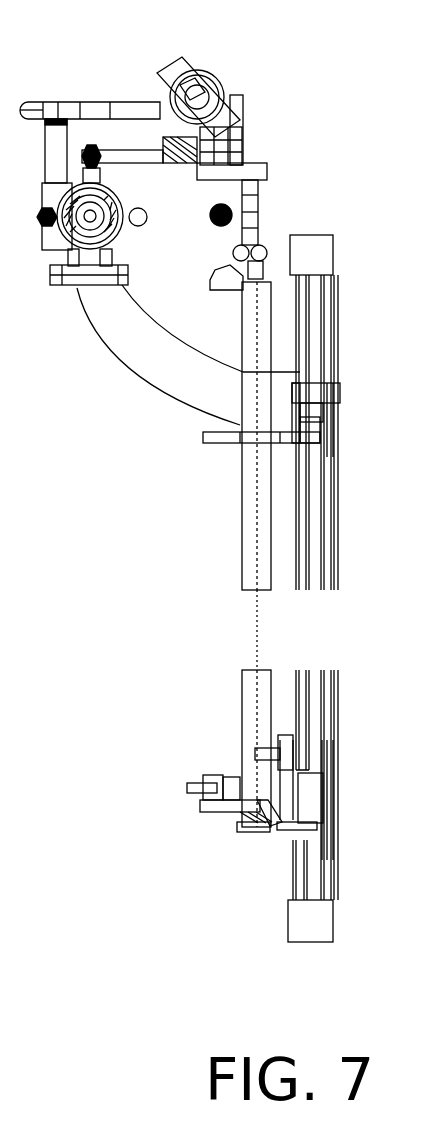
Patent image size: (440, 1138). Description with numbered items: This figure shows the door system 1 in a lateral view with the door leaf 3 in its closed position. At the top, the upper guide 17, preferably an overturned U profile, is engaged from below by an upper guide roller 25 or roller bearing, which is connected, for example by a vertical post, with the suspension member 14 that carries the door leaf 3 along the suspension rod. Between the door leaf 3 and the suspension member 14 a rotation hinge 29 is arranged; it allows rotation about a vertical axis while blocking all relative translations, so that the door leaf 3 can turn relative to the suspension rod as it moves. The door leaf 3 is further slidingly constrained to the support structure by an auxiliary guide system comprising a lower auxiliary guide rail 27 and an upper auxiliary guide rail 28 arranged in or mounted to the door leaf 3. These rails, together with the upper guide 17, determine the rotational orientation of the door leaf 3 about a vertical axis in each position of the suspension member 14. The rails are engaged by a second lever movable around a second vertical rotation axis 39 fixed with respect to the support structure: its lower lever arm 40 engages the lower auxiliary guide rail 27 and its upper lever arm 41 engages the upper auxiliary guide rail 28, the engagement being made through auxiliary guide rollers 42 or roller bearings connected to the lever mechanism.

The filling device 1 is at (110, 455).
The door leaf 3 is at (340, 508).
The suspension member 14 is at (85, 268).
The upper guide 17 is at (96, 106).
The upper guide roller 25 is at (62, 105).
The lower auxiliary guide rail 27 is at (305, 778).
The upper auxiliary guide rail 28 is at (337, 395).
The rotation hinge 29 is at (100, 284).
The second rotation axis 39 is at (258, 318).
The lower lever arm 40 is at (280, 832).
The upper lever arm 41 is at (243, 445).
The auxiliary guide rollers 42 is at (320, 410).